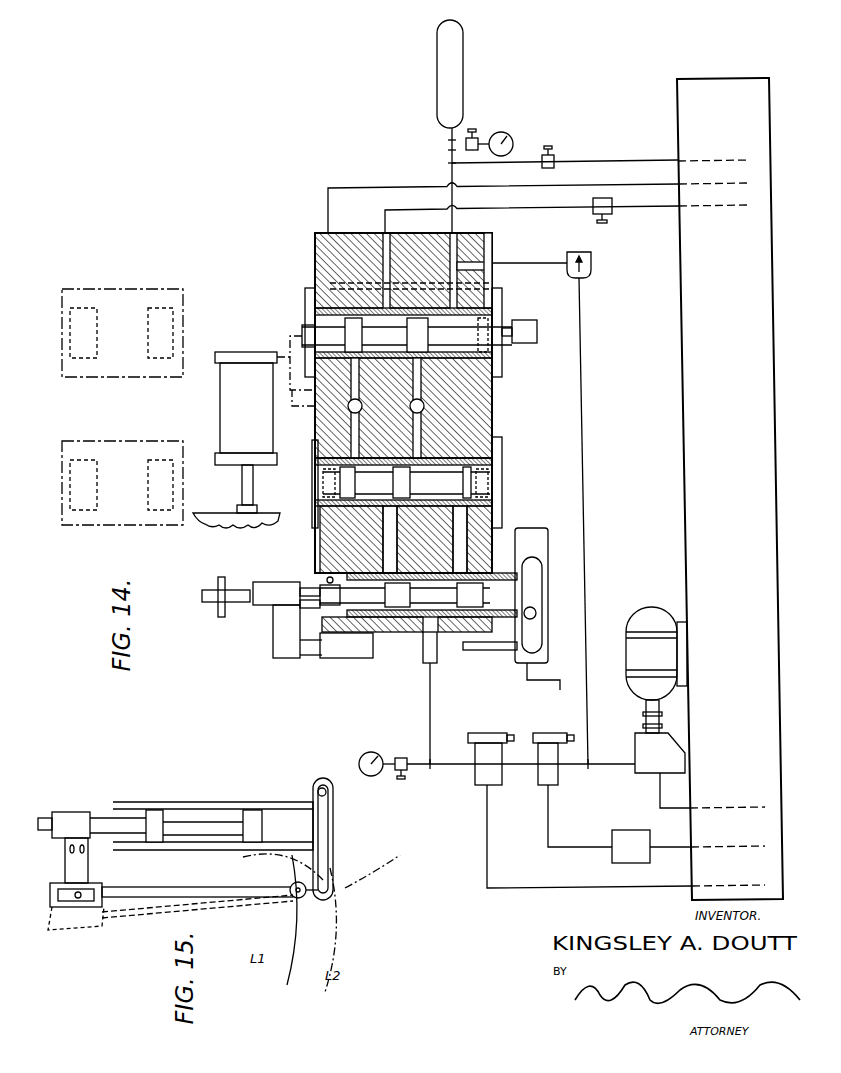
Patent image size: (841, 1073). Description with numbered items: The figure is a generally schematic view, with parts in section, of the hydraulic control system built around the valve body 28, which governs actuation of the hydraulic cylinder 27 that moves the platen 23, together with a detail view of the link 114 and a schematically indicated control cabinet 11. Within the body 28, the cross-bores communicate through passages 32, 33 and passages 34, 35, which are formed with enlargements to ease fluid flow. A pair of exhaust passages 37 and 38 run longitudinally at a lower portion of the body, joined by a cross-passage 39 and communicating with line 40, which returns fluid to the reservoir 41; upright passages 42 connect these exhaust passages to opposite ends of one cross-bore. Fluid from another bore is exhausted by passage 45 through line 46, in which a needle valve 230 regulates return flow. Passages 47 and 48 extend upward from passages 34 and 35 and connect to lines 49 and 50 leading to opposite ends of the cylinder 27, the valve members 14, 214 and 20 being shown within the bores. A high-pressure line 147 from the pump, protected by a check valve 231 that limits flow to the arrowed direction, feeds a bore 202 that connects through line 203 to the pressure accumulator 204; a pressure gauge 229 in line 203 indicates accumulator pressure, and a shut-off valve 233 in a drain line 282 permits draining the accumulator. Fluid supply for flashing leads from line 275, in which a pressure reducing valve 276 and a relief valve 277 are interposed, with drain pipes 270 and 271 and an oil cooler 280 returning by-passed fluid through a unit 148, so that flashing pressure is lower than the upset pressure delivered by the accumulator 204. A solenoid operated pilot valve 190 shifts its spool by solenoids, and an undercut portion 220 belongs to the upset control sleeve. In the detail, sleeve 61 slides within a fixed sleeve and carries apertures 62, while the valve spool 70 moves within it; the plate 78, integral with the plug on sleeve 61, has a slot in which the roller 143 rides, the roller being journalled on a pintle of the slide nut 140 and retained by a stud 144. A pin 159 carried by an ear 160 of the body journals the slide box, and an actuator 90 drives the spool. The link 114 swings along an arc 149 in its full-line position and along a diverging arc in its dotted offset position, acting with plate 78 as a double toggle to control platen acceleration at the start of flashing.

In FIG. 14, the control cabinet 11 is at (676, 93).
In FIG. 14, the pressure accumulator 204 is at (450, 56).
In FIG. 14, the line 203 is at (450, 175).
In FIG. 14, the pressure gauge 229 is at (499, 132).
In FIG. 14, the shut-off valve 233 is at (550, 153).
In FIG. 14, the line 282 is at (607, 161).
In FIG. 14, the line 40 is at (362, 187).
In FIG. 14, the line 46 is at (527, 208).
In FIG. 14, the needle valve 230 is at (612, 210).
In FIG. 14, the valve body 28 is at (312, 240).
In FIG. 14, the cross-passage 39 is at (350, 235).
In FIG. 14, the passage 45 is at (376, 240).
In FIG. 14, the bore 202 is at (458, 247).
In FIG. 14, the exhaust passage 37 is at (315, 255).
In FIG. 14, the piston rod 214 is at (345, 330).
In FIG. 14, the line 50 is at (292, 380).
In FIG. 14, the passage 47 is at (300, 406).
In FIG. 14, the passage 48 is at (450, 400).
In FIG. 14, the exhaust passage 38 is at (493, 383).
In FIG. 14, the passage 34 is at (325, 428).
In FIG. 14, the line 49 is at (314, 448).
In FIG. 14, the piston 14 is at (490, 489).
In FIG. 14, the passage 35 is at (530, 469).
In FIG. 14, the passage 32 is at (386, 539).
In FIG. 14, the passage 33 is at (469, 539).
In FIG. 14, the piston rod 20 is at (394, 604).
In FIG. 14, the upright passage 42 is at (328, 580).
In FIG. 14, the reservoir 41 is at (228, 604).
In FIG. 14, the apertures 62 is at (548, 590).
In FIG. 14, the hydraulic cylinder 27 is at (228, 405).
In FIG. 14, the platen 23 is at (212, 522).
In FIG. 14, the ear 160 is at (100, 289).
In FIG. 14, the solenoid operated pilot valve 190 is at (78, 525).
In FIG. 14, the slide nut 140 is at (556, 265).
In FIG. 14, the check valve 231 is at (593, 270).
In FIG. 14, the line 147 is at (584, 498).
In FIG. 14, the stud 144 is at (638, 620).
In FIG. 14, the valve 148 is at (640, 748).
In FIG. 14, the undercut portion 220 is at (660, 790).
In FIG. 14, the line 275 is at (455, 767).
In FIG. 14, the pressure reducing valve 276 is at (492, 778).
In FIG. 14, the line 270 is at (523, 889).
In FIG. 14, the relief valve 277 is at (550, 770).
In FIG. 14, the line 271 is at (593, 836).
In FIG. 14, the oil cooler 280 is at (625, 830).
In FIG. 14, the arc 149 is at (369, 852).
In FIG. 15, the sleeve 61 is at (220, 803).
In FIG. 15, the valve spool 70 is at (192, 822).
In FIG. 15, the actuator 90 is at (45, 817).
In FIG. 15, the link 114 is at (143, 898).
In FIG. 15, the plate 78 is at (327, 790).
In FIG. 15, the pin 159 is at (313, 790).
In FIG. 15, the roller 143 is at (328, 838).